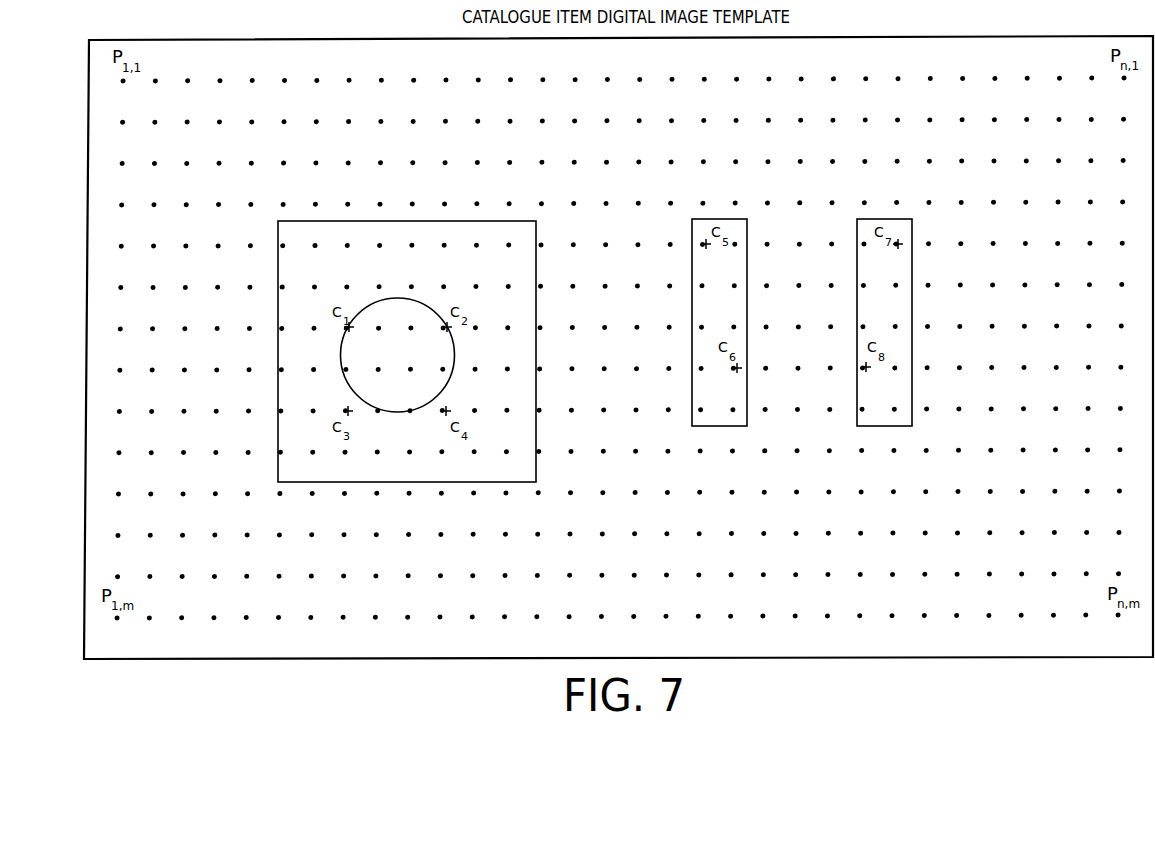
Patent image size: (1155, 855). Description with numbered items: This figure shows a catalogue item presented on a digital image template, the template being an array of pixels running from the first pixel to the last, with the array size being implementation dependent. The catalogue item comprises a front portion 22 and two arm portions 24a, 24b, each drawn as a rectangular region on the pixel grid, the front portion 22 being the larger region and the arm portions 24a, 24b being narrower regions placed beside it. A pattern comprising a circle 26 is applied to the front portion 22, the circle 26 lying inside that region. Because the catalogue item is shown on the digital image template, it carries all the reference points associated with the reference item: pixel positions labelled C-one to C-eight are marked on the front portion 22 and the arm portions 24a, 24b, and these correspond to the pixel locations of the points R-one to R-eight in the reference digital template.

The front portion 22 is at (537, 257).
The arm portion 24a is at (748, 261).
The arm portion 24b is at (913, 261).
The circle 26 is at (455, 348).